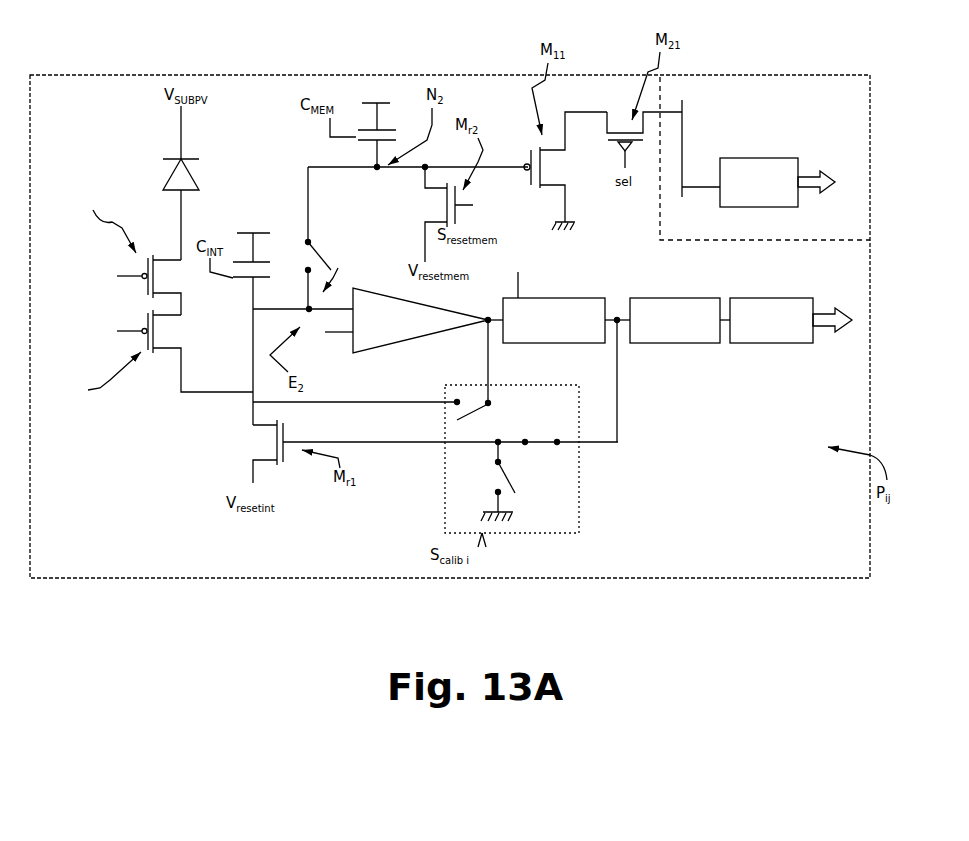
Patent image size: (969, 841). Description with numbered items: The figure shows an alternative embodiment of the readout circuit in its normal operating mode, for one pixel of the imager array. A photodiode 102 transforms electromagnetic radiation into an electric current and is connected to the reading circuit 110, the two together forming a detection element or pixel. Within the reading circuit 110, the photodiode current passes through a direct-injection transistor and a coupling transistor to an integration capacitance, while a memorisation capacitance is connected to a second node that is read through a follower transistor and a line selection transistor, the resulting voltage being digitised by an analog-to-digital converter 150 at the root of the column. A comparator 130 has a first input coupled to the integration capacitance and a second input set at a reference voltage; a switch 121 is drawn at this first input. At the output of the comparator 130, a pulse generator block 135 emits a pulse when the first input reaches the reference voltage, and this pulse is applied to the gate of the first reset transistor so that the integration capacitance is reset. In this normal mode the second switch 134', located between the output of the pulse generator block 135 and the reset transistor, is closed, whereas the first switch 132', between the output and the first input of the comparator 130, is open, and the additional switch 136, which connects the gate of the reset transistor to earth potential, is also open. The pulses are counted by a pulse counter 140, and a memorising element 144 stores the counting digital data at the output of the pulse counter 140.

The photodiode 102 is at (203, 178).
The reading circuit 110 is at (176, 440).
The switch E1 121 is at (318, 252).
The comparator 130 is at (428, 336).
The first switch 132' is at (403, 387).
The second switch 134' is at (582, 465).
The pulse generator block 135 is at (582, 298).
The additional switch 136 is at (513, 478).
The pulse counter 140 is at (670, 343).
The memorising element 144 is at (789, 343).
The analog-to-digital converter 150 is at (738, 158).